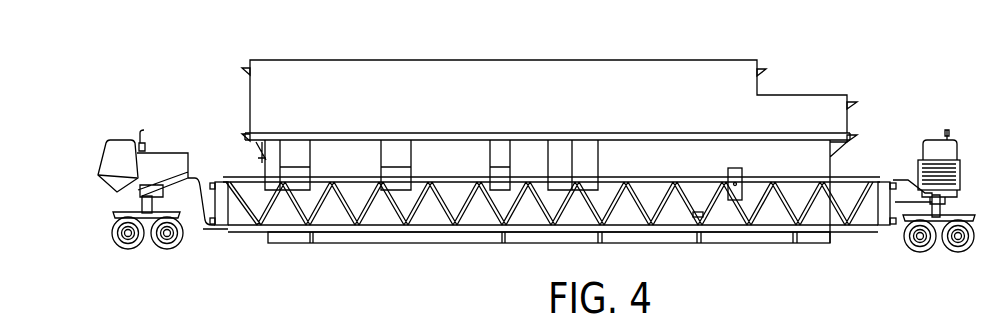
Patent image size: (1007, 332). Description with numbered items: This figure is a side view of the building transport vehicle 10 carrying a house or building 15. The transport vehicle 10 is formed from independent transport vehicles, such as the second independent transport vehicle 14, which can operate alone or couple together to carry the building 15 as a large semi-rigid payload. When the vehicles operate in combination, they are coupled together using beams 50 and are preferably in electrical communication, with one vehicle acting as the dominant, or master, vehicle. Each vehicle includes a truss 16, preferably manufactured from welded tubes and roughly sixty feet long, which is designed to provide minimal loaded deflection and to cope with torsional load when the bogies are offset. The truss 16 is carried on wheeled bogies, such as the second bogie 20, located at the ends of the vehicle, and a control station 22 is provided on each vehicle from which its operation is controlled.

The building transport vehicle 10 is at (890, 157).
The second independent transport vehicle 14 is at (436, 232).
The house or building 15 is at (416, 83).
The truss 16 is at (380, 234).
The second bogie 20 is at (168, 247).
The control station 22 is at (118, 152).
The beams 50 is at (500, 240).